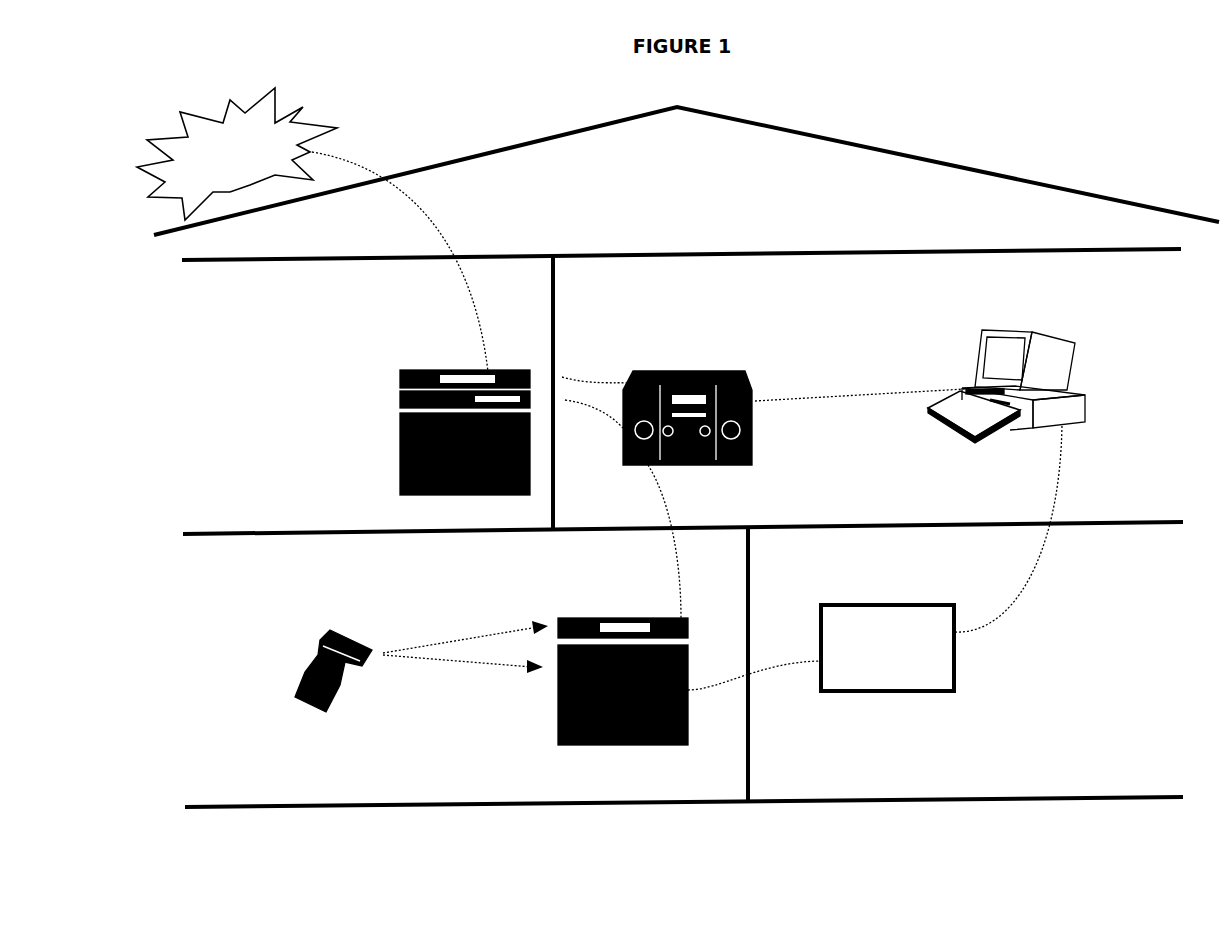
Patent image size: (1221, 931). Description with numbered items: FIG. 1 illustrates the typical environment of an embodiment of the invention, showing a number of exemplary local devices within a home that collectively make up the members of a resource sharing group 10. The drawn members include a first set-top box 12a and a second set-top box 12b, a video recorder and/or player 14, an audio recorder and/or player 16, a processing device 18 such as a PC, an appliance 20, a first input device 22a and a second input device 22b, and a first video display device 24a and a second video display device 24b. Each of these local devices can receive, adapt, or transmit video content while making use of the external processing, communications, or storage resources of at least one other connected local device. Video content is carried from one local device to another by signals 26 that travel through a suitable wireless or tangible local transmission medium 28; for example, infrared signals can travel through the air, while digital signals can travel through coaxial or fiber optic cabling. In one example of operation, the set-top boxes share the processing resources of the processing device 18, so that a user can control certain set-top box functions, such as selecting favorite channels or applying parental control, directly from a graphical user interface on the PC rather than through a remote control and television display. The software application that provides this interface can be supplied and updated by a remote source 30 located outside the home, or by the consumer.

The resource sharing group 10 is at (240, 397).
The set-top box 12a is at (470, 371).
The set-top box 12b is at (622, 617).
The video recorder and/or player 14 is at (410, 400).
The audio recorder and/or player 16 is at (733, 371).
The processing device 18 is at (1036, 369).
The appliance 20 is at (882, 604).
The input device 22a is at (992, 391).
The input device 22b is at (358, 640).
The video display device 24a is at (462, 454).
The video display device 24b is at (560, 742).
The signals 26 is at (493, 637).
The local transmission medium 28 is at (845, 395).
The remote source 30 is at (230, 122).